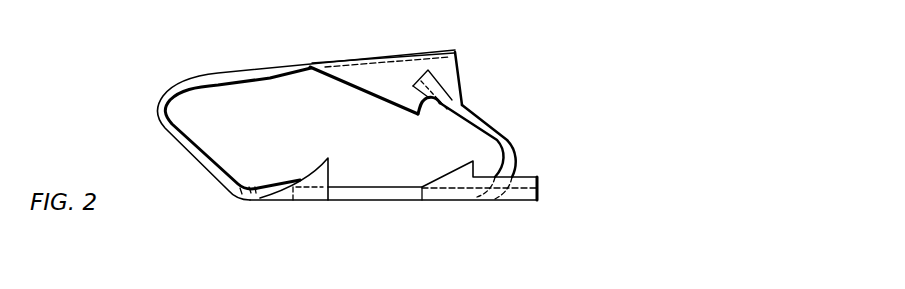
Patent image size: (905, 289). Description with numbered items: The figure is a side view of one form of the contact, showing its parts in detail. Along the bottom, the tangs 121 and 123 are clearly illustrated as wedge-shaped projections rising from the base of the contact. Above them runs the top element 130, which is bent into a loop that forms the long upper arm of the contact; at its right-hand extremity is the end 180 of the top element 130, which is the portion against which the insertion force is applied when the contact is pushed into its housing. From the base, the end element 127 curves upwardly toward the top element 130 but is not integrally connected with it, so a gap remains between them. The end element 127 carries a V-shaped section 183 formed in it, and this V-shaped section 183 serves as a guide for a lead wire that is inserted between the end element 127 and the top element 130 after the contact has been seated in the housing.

The top element 130 is at (440, 53).
The end 180 is at (458, 74).
The V-shaped section 183 is at (414, 88).
The end element 127 is at (495, 133).
The tang 123 is at (312, 178).
The tang 121 is at (455, 180).